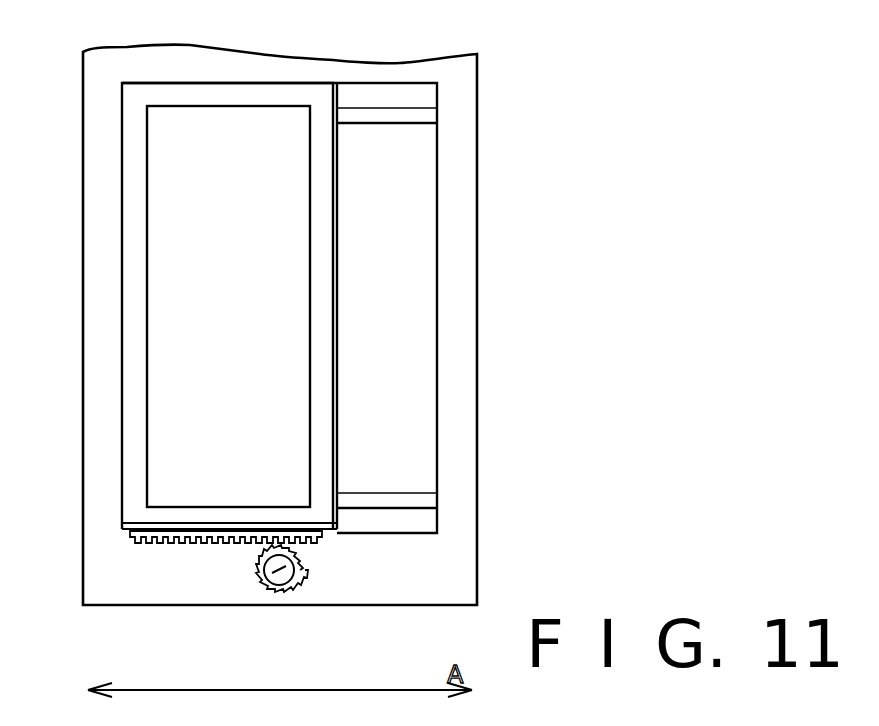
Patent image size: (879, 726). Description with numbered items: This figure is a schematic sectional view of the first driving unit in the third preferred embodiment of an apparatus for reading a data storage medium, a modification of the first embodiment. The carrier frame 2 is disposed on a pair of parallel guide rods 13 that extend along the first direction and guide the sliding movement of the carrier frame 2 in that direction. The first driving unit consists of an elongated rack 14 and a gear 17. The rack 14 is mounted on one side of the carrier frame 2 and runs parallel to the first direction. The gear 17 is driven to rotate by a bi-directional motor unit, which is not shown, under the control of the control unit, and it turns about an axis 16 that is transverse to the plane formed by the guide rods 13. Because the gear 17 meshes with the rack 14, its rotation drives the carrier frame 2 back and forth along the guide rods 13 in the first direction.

The carrier frame 2 is at (170, 338).
The guide rods 13 is at (413, 115).
The rack 14 is at (175, 543).
The axis 16 is at (264, 575).
The gear 17 is at (268, 592).